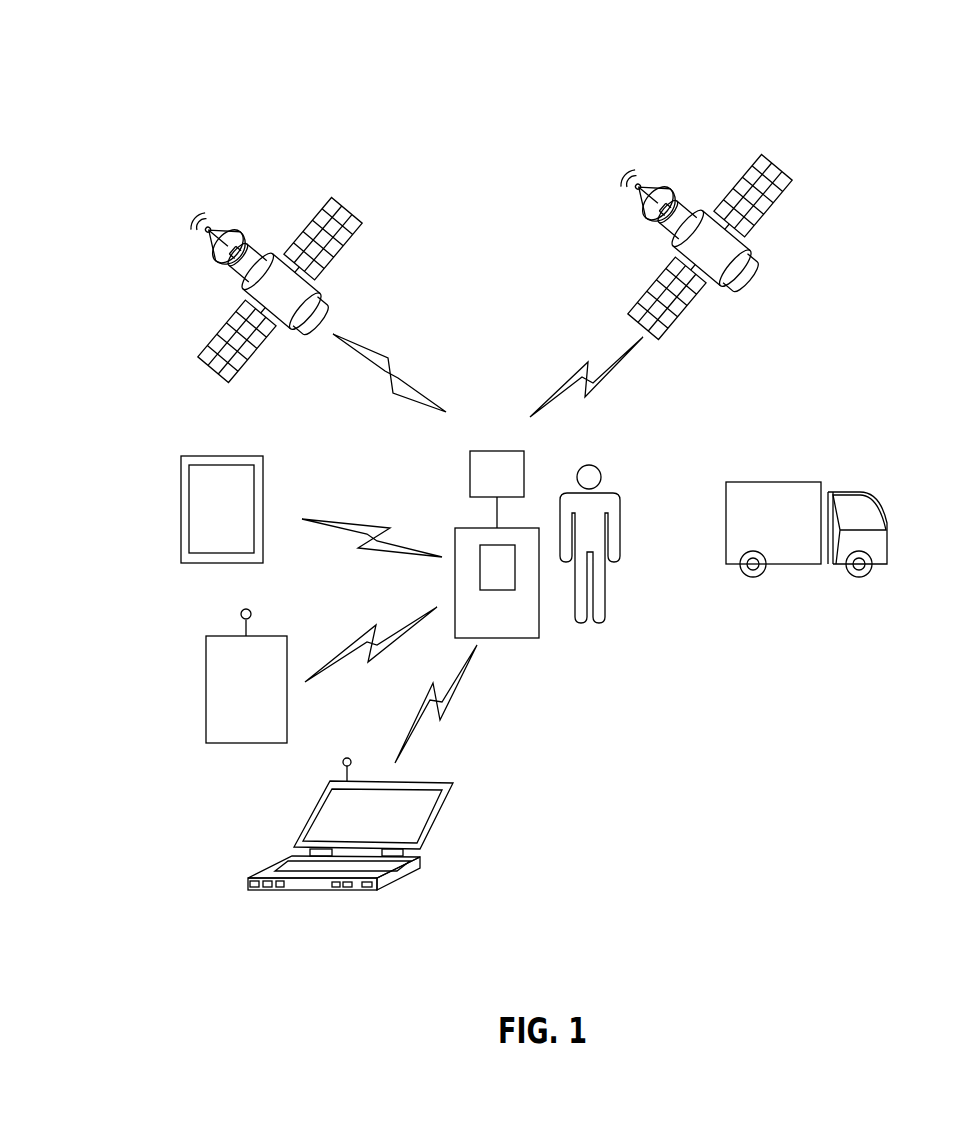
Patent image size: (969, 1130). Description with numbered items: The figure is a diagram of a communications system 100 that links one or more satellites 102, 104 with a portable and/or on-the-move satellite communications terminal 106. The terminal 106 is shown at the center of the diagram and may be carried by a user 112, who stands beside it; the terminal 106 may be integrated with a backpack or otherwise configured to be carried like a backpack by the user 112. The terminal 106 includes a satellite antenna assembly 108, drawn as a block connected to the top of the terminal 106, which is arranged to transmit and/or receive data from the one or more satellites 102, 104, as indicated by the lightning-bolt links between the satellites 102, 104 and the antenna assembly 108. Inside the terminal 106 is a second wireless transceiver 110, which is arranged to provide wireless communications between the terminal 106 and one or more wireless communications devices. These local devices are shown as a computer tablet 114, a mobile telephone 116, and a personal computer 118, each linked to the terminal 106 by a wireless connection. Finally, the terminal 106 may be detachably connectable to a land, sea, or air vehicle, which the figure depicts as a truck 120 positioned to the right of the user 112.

The communications system 100 is at (129, 60).
The satellite 102 is at (348, 205).
The satellite 104 is at (775, 165).
The satellite communications terminal 106 is at (477, 528).
The satellite antenna assembly 108 is at (502, 451).
The second wireless transceiver 110 is at (497, 592).
The user 112 is at (621, 541).
The computer tablet 114 is at (220, 455).
The mobile telephone 116 is at (206, 690).
The personal computer 118 is at (407, 877).
The truck 120 is at (765, 482).